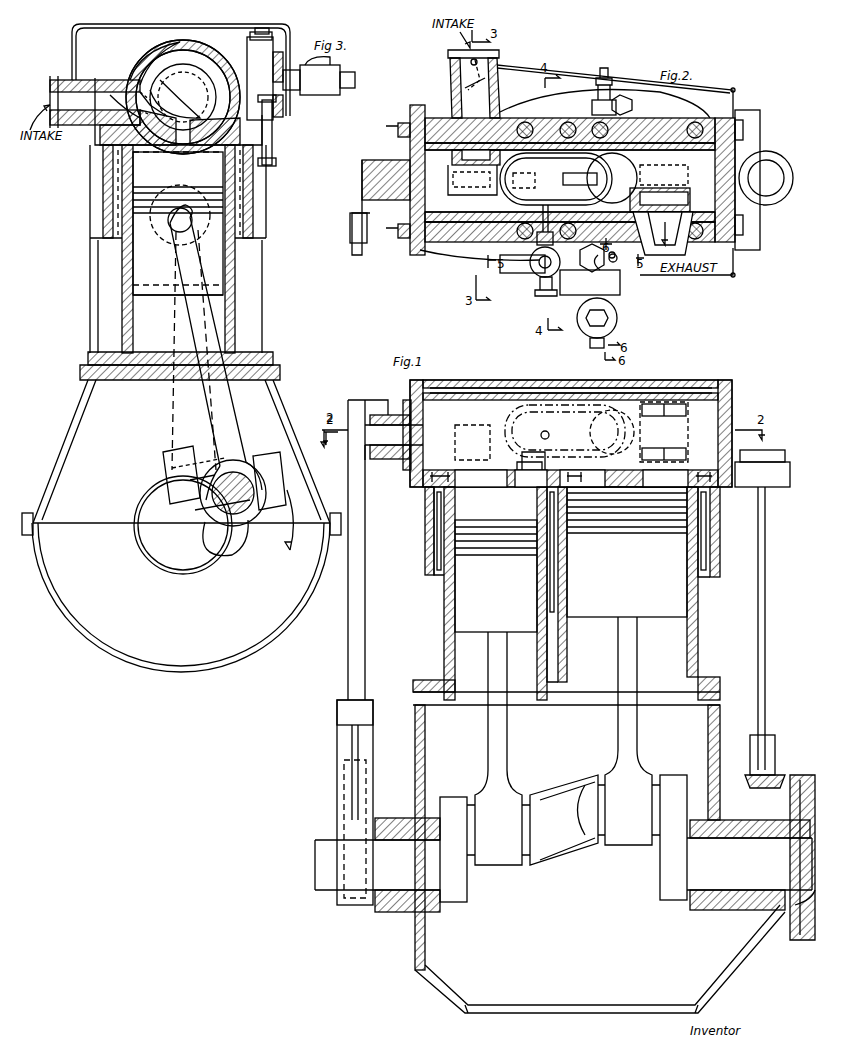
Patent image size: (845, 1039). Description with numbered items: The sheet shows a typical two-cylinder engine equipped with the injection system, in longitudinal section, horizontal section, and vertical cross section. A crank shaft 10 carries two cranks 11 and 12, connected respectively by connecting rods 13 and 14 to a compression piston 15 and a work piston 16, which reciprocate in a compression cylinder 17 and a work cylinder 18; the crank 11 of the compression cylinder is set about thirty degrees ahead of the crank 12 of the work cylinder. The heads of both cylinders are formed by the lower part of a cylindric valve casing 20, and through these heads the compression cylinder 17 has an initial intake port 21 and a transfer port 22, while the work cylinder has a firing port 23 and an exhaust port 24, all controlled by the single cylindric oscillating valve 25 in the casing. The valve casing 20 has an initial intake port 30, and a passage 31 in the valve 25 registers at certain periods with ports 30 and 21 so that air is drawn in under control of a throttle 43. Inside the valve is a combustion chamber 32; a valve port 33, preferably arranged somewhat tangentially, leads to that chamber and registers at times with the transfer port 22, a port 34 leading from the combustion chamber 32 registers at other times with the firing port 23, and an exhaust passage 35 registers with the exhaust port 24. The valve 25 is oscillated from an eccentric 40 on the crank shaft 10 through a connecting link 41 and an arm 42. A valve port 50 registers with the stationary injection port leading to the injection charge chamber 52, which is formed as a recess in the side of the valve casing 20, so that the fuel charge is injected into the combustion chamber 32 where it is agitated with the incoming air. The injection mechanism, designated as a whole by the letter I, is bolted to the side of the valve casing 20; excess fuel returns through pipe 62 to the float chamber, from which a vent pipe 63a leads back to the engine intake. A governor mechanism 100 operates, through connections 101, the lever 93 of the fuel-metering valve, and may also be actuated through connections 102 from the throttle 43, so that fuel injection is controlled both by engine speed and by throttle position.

In FIG. 3, the crank shaft 10 is at (191, 525).
In FIG. 1, the crank shaft 10 is at (565, 846).
In FIG. 3, the crank 11 is at (236, 520).
In FIG. 1, the crank 11 is at (453, 849).
In FIG. 3, the crank 12 is at (178, 460).
In FIG. 1, the crank 12 is at (673, 837).
In FIG. 3, the connecting rod 13 is at (222, 430).
In FIG. 1, the connecting rod 13 is at (497, 745).
In FIG. 3, the connecting rod 14 is at (188, 408).
In FIG. 1, the connecting rod 14 is at (628, 726).
In FIG. 3, the compression piston 15 is at (178, 235).
In FIG. 1, the compression piston 15 is at (496, 576).
In FIG. 3, the work piston 16 is at (122, 258).
In FIG. 1, the work piston 16 is at (627, 552).
In FIG. 3, the compression cylinder 17 is at (146, 320).
In FIG. 1, the compression cylinder 17 is at (450, 593).
In FIG. 1, the work cylinder 18 is at (628, 593).
In FIG. 3, the valve casing 20 is at (195, 50).
In FIG. 2, the valve casing 20 is at (450, 245).
In FIG. 1, the valve casing 20 is at (688, 380).
In FIG. 3, the initial intake port 21 is at (178, 147).
In FIG. 2, the initial intake port 21 is at (472, 188).
In FIG. 1, the initial intake port 21 is at (570, 478).
In FIG. 2, the transfer port 22 is at (556, 179).
In FIG. 1, the transfer port 22 is at (531, 474).
In FIG. 1, the firing port 23 is at (582, 478).
In FIG. 2, the exhaust port 24 is at (660, 165).
In FIG. 1, the exhaust port 24 is at (677, 478).
In FIG. 3, the cylindric oscillating valve 25 is at (160, 60).
In FIG. 1, the cylindric oscillating valve 25 is at (629, 411).
In FIG. 3, the initial intake port 30 is at (100, 102).
In FIG. 2, the initial intake port 30 is at (474, 84).
In FIG. 3, the passage 31 is at (178, 97).
In FIG. 2, the passage 31 is at (476, 157).
In FIG. 1, the passage 31 is at (455, 455).
In FIG. 2, the combustion chamber 32 is at (546, 214).
In FIG. 1, the combustion chamber 32 is at (545, 380).
In FIG. 1, the valve port 33 is at (540, 458).
In FIG. 2, the port 34 is at (612, 164).
In FIG. 1, the port 34 is at (612, 432).
In FIG. 2, the exhaust passage 35 is at (660, 200).
In FIG. 1, the exhaust passage 35 is at (664, 432).
In FIG. 1, the eccentric 40 is at (337, 812).
In FIG. 1, the connecting link 41 is at (360, 596).
In FIG. 2, the arm 42 is at (362, 203).
In FIG. 1, the arm 42 is at (370, 407).
In FIG. 3, the throttle 43 is at (92, 90).
In FIG. 2, the throttle 43 is at (485, 82).
In FIG. 1, the valve port 50 is at (549, 434).
In FIG. 2, the injection charge chamber 52 is at (480, 242).
In FIG. 2, the pipe 62 is at (590, 270).
In FIG. 3, the vent pipe 63a is at (125, 30).
In FIG. 2, the vent pipe 63a is at (620, 272).
In FIG. 2, the lever 93 is at (530, 278).
In FIG. 2, the governor mechanism 100 is at (766, 178).
In FIG. 1, the governor mechanism 100 is at (770, 448).
In FIG. 2, the connections 101 is at (718, 275).
In FIG. 2, the connections 102 is at (575, 72).
In FIG. 3, the injection mechanism I is at (285, 125).
In FIG. 2, the injection mechanism I is at (534, 291).